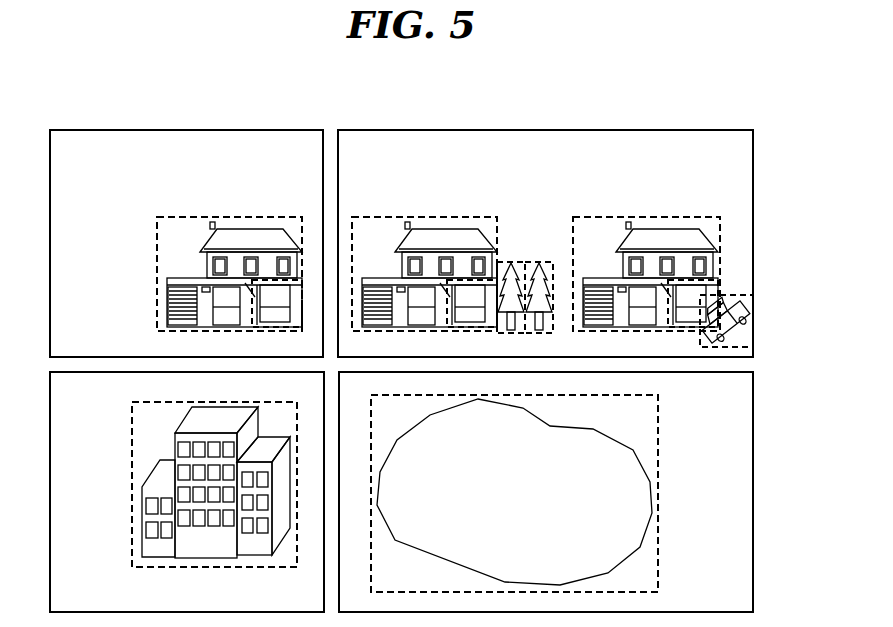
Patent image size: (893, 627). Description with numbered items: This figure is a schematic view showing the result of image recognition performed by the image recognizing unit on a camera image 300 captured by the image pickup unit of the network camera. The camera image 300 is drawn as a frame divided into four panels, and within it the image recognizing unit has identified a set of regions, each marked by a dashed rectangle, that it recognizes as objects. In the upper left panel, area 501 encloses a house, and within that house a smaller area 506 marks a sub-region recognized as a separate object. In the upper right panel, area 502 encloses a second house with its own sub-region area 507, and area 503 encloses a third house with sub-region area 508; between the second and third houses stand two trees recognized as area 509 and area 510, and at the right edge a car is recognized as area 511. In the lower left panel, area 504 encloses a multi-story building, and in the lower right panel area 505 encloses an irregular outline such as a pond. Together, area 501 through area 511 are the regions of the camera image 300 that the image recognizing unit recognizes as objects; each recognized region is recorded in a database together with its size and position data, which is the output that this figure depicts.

The camera image 300 is at (153, 130).
The area 501 is at (216, 216).
The area 502 is at (410, 216).
The area 503 is at (606, 216).
The area 504 is at (238, 402).
The area 505 is at (518, 396).
The area 506 is at (252, 319).
The area 507 is at (442, 319).
The area 508 is at (662, 319).
The area 509 is at (508, 258).
The area 510 is at (537, 258).
The area 511 is at (742, 296).